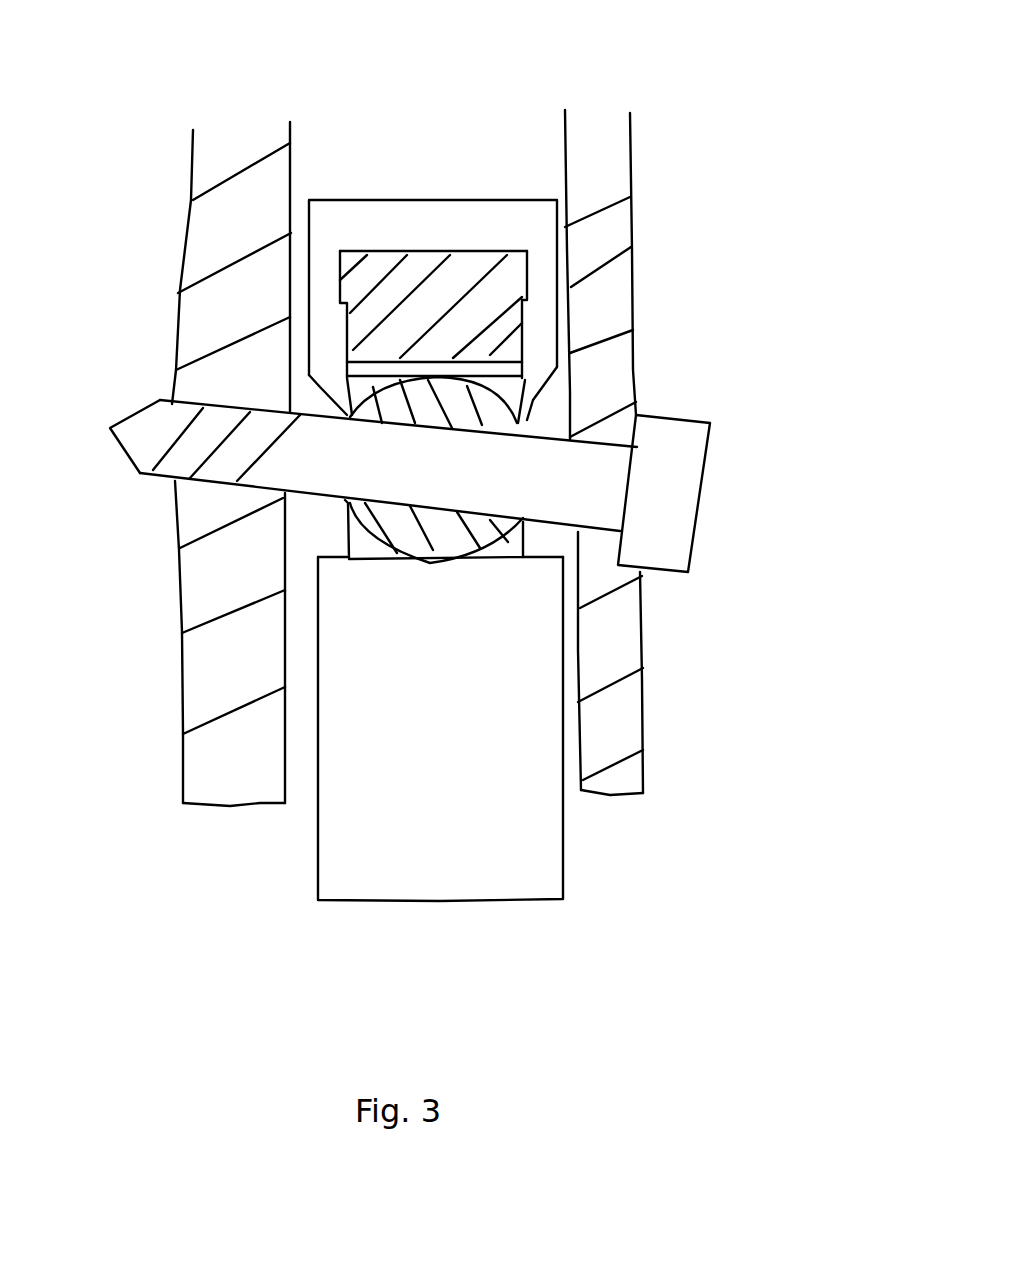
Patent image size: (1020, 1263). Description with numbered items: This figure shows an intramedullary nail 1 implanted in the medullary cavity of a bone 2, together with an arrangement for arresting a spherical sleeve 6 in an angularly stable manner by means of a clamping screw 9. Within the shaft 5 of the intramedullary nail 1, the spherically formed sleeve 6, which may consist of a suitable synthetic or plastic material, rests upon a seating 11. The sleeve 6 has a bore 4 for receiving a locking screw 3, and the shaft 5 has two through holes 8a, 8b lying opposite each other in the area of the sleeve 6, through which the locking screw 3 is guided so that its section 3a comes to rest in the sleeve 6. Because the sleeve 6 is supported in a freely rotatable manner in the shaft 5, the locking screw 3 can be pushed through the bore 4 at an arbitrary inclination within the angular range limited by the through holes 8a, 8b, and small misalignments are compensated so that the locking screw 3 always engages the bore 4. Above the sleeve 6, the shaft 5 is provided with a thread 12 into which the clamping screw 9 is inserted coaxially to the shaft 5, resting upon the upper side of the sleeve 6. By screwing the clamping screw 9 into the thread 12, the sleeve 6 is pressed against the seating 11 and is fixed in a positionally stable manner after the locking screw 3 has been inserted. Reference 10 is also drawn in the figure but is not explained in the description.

The intramedullary nail 1 is at (385, 773).
The bone 2 is at (210, 152).
The locking screw 3 is at (688, 572).
The section of the locking screw 3a is at (432, 473).
The bore 4 is at (270, 488).
The shaft 5 is at (540, 232).
The sleeve 6 is at (500, 417).
The through hole 8a is at (345, 512).
The through hole 8b is at (505, 382).
The clamping screw 9 is at (505, 275).
The cup lower left edge 10 is at (338, 390).
The seating 11 is at (513, 557).
The thread 12 is at (343, 347).